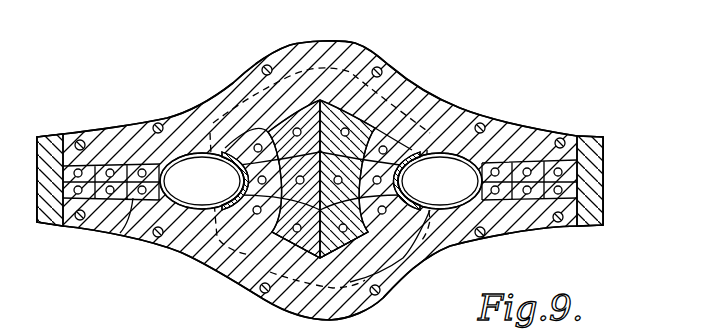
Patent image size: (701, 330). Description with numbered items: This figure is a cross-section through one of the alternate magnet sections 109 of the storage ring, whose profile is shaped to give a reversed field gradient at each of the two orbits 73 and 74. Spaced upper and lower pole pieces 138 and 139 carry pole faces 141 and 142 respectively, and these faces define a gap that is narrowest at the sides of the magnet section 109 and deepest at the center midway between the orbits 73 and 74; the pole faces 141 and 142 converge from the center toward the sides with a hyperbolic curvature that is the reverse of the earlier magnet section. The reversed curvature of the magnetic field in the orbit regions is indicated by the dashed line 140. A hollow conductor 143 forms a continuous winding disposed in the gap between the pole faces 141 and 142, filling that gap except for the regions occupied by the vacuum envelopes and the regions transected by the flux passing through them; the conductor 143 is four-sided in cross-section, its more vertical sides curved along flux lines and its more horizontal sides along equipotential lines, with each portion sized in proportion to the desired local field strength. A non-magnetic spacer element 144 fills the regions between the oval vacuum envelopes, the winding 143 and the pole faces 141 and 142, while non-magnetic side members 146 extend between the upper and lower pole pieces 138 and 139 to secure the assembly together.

The alternate magnet section 109 is at (526, 94).
The upper pole piece 138 is at (352, 43).
The lower pole piece 139 is at (240, 285).
The dashed line 140 is at (400, 252).
The pole face 141 is at (307, 100).
The pole face 142 is at (320, 258).
The hollow conductor 143 is at (123, 232).
The non-magnetic spacer element 144 is at (425, 137).
The non-magnetic side members 146 is at (52, 137).
The orbit 73 is at (200, 181).
The orbit 74 is at (441, 180).